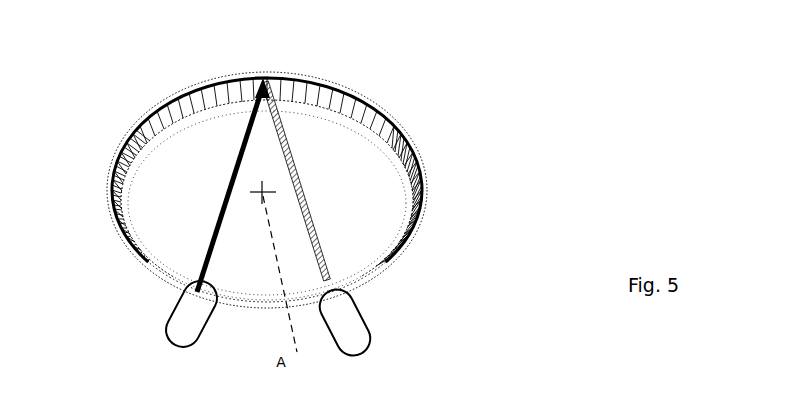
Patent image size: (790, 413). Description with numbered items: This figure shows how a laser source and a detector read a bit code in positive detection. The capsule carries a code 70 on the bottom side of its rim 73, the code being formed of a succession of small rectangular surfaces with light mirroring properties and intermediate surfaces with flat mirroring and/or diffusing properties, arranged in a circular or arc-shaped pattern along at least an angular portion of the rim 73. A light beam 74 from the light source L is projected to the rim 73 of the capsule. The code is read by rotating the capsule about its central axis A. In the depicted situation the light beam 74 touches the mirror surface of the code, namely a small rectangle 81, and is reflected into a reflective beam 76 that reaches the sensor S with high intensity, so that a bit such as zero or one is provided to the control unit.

The code 70 is at (396, 115).
The rim 73 is at (136, 100).
The light beam 74 is at (215, 199).
The reflective beam 76 is at (318, 200).
The small rectangle 81 is at (262, 62).